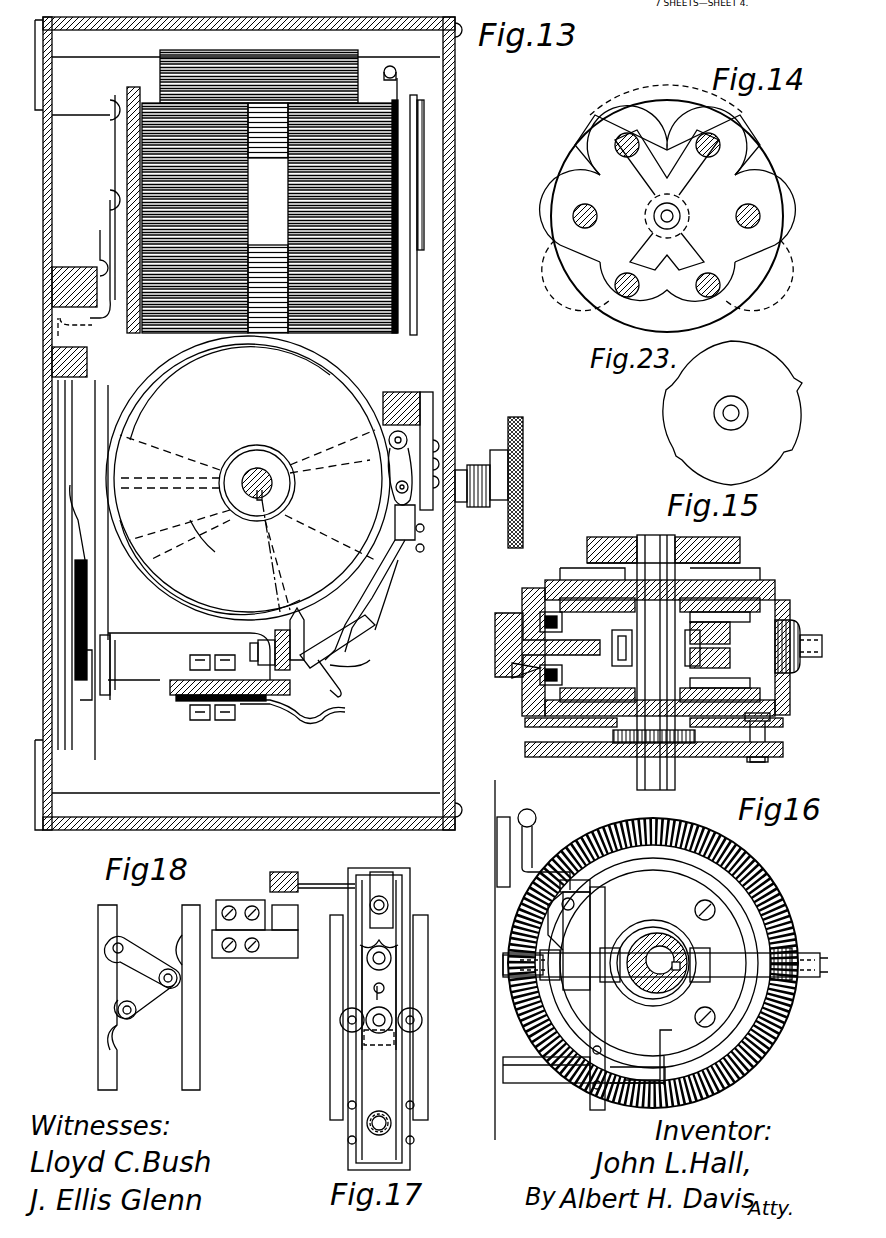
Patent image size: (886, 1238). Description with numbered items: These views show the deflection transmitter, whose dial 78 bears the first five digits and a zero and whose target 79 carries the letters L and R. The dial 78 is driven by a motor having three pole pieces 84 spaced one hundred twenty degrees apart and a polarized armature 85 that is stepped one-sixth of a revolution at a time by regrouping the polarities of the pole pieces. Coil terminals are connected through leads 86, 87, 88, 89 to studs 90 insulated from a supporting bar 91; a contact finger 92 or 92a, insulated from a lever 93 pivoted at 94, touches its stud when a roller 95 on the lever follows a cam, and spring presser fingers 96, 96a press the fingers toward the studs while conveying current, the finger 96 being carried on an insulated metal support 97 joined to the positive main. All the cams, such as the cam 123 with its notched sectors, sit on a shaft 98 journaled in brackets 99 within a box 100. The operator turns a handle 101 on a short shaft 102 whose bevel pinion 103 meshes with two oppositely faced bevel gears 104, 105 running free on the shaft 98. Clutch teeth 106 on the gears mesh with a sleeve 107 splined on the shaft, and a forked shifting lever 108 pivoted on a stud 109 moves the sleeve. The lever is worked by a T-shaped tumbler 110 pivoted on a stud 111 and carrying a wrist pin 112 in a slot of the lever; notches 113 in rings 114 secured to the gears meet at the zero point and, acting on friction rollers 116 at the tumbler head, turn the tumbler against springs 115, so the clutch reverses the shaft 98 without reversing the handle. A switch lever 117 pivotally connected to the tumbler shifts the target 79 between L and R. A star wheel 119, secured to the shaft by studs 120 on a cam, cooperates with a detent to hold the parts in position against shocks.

In FIG. 13, the dial 78 is at (412, 290).
In FIG. 13, the target 79 is at (424, 158).
In FIG. 13, the pole pieces 84 is at (262, 191).
In FIG. 14, the pole pieces 84 is at (665, 120).
In FIG. 14, the polarized armature 85 is at (667, 216).
In FIG. 13, the lead 86 is at (112, 250).
In FIG. 13, the lead 87 is at (65, 410).
In FIG. 13, the lead 88 is at (80, 530).
In FIG. 13, the lead 89 is at (135, 632).
In FIG. 13, the stud 90 is at (300, 648).
In FIG. 13, the supporting bar 91 is at (292, 686).
In FIG. 13, the contact finger 92 is at (340, 660).
In FIG. 13, the contact finger 92a is at (335, 668).
In FIG. 13, the lever 93 is at (415, 450).
In FIG. 13, the pivot 94 is at (410, 418).
In FIG. 13, the roller 95 is at (434, 468).
In FIG. 13, the spring presser finger 96 is at (388, 622).
In FIG. 13, the spring presser finger 96a is at (380, 640).
In FIG. 13, the insulated metal support 97 is at (195, 700).
In FIG. 13, the shaft 98 is at (262, 470).
In FIG. 15, the shaft 98 is at (676, 775).
In FIG. 16, the shaft 98 is at (653, 945).
In FIG. 13, the bracket 99 is at (220, 542).
In FIG. 13, the box 100 is at (293, 816).
In FIG. 13, the handle 101 is at (524, 440).
In FIG. 13, the short shaft 102 is at (476, 508).
In FIG. 15, the short shaft 102 is at (810, 660).
In FIG. 16, the short shaft 102 is at (808, 980).
In FIG. 15, the bevel pinion 103 is at (796, 628).
In FIG. 16, the bevel pinion 103 is at (790, 942).
In FIG. 15, the bevel gear 104 is at (757, 585).
In FIG. 16, the bevel gear 104 is at (750, 1063).
In FIG. 15, the bevel gear 105 is at (780, 705).
In FIG. 15, the clutch teeth 106 is at (705, 617).
In FIG. 15, the sleeve 107 is at (718, 656).
In FIG. 16, the sleeve 107 is at (683, 952).
In FIG. 15, the shifting lever 108 is at (722, 636).
In FIG. 16, the shifting lever 108 is at (668, 1025).
In FIG. 17, the shifting lever 108 is at (375, 1080).
In FIG. 16, the stud 109 is at (535, 1083).
In FIG. 17, the stud 109 is at (392, 1125).
In FIG. 16, the tumbler 110 is at (580, 935).
In FIG. 17, the tumbler 110 is at (395, 1014).
In FIG. 18, the tumbler 110 is at (135, 975).
In FIG. 16, the stud 111 is at (507, 962).
In FIG. 17, the stud 111 is at (379, 1037).
In FIG. 16, the wrist pin 112 is at (600, 902).
In FIG. 17, the wrist pin 112 is at (368, 960).
In FIG. 18, the wrist pin 112 is at (113, 948).
In FIG. 18, the notch 113 is at (180, 945).
In FIG. 15, the ring 114 is at (775, 602).
In FIG. 16, the ring 114 is at (648, 862).
In FIG. 17, the ring 114 is at (335, 1068).
In FIG. 18, the ring 114 is at (100, 1060).
In FIG. 16, the spring 115 is at (606, 1030).
In FIG. 17, the spring 115 is at (360, 978).
In FIG. 15, the friction roller 116 is at (527, 680).
In FIG. 16, the friction roller 116 is at (520, 993).
In FIG. 17, the friction roller 116 is at (381, 1122).
In FIG. 18, the friction roller 116 is at (132, 1012).
In FIG. 16, the switch lever 117 is at (536, 868).
In FIG. 17, the switch lever 117 is at (320, 888).
In FIG. 15, the star wheel 119 is at (775, 727).
In FIG. 15, the stud 120 is at (757, 762).
In FIG. 23, the cam 123 is at (732, 413).